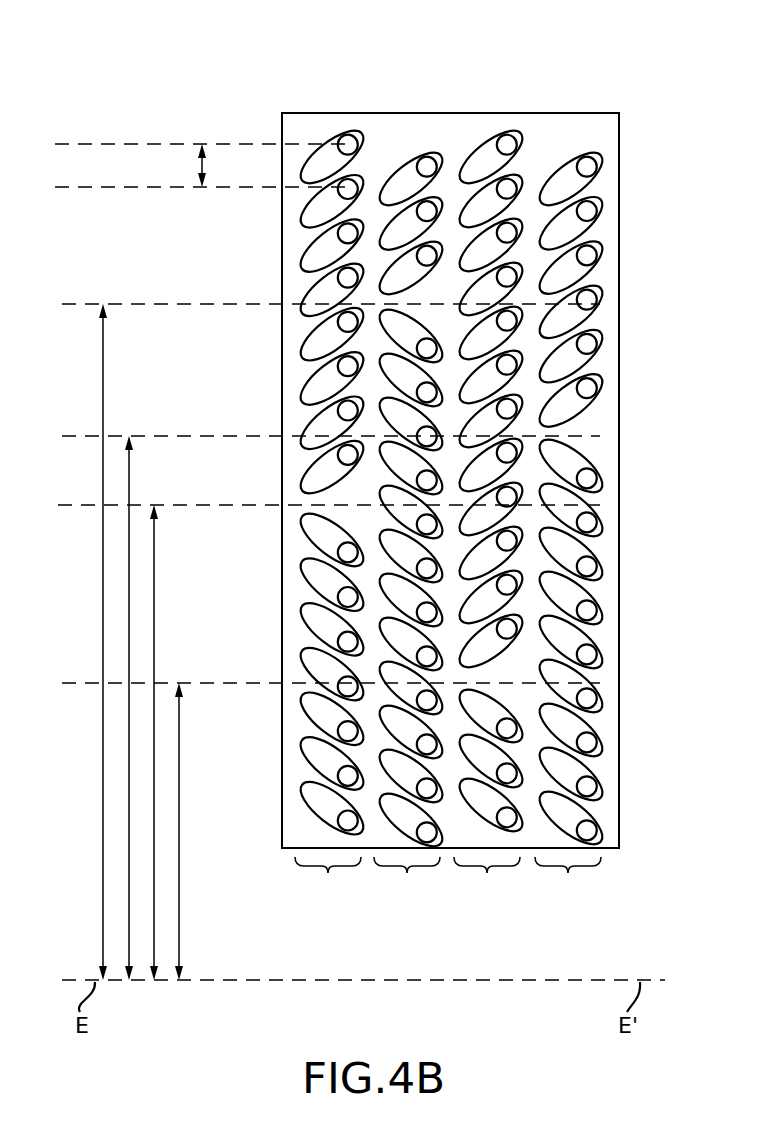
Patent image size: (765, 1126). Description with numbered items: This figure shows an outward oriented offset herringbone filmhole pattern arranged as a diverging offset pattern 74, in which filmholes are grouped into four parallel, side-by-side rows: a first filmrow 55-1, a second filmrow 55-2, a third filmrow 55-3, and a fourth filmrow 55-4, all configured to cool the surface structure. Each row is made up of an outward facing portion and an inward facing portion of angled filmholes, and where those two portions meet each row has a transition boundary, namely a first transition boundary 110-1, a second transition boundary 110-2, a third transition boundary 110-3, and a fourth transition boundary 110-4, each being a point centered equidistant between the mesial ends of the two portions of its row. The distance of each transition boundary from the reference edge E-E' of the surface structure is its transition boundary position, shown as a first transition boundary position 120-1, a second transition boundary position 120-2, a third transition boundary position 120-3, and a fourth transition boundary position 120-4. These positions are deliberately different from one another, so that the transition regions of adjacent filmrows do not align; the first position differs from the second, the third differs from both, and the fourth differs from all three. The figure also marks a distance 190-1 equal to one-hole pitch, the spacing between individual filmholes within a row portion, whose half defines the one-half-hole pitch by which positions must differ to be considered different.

The diverging offset pattern 74 is at (536, 61).
The first filmrow 55-1 is at (332, 514).
The second filmrow 55-2 is at (411, 525).
The third filmrow 55-3 is at (491, 514).
The fourth filmrow 55-4 is at (571, 525).
The distance 190-1 is at (202, 155).
The first transition boundary position 120-1 is at (76, 504).
The second transition boundary position 120-2 is at (88, 303).
The third transition boundary position 120-3 is at (88, 683).
The fourth transition boundary position 120-4 is at (76, 435).
The first transition boundary 110-1 is at (312, 505).
The second transition boundary 110-2 is at (383, 302).
The third transition boundary 110-3 is at (472, 683).
The fourth transition boundary 110-4 is at (547, 437).